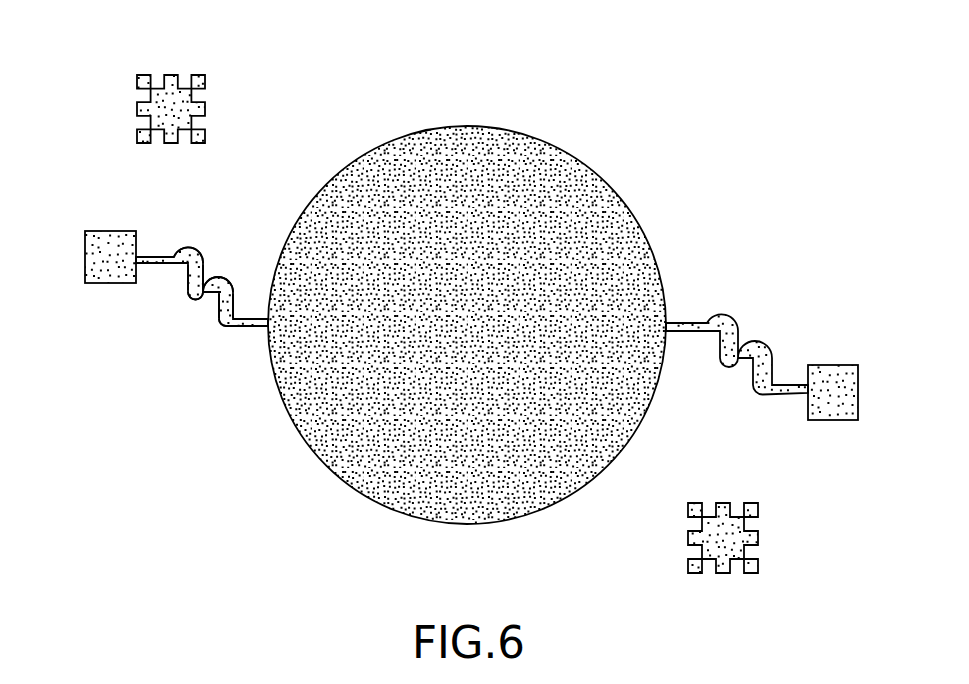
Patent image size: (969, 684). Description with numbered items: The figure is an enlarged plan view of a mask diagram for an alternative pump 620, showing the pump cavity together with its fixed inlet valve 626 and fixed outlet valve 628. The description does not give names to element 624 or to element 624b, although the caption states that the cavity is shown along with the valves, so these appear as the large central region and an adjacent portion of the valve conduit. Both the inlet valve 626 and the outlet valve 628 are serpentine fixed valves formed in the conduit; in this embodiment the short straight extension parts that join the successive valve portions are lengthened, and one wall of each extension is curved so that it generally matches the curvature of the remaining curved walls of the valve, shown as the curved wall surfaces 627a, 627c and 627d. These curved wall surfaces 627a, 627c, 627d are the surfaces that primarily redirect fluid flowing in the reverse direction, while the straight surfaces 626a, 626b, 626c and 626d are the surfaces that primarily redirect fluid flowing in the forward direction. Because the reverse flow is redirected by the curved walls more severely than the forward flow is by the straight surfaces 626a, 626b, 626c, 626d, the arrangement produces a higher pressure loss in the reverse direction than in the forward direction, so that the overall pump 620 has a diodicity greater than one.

The pump 620 is at (313, 119).
The circular electrode 624 is at (648, 240).
The serpentine lead segment 624b is at (237, 284).
The inlet valve 626 is at (246, 173).
The straight surface 626a is at (185, 260).
The straight surface 626b is at (208, 275).
The straight surface 626c is at (213, 294).
The straight surface 626d is at (260, 326).
The curved wall surface 627a is at (222, 317).
The curved wall surface 627c is at (192, 283).
The curved wall surface 627d is at (186, 247).
The outlet valve 628 is at (785, 432).